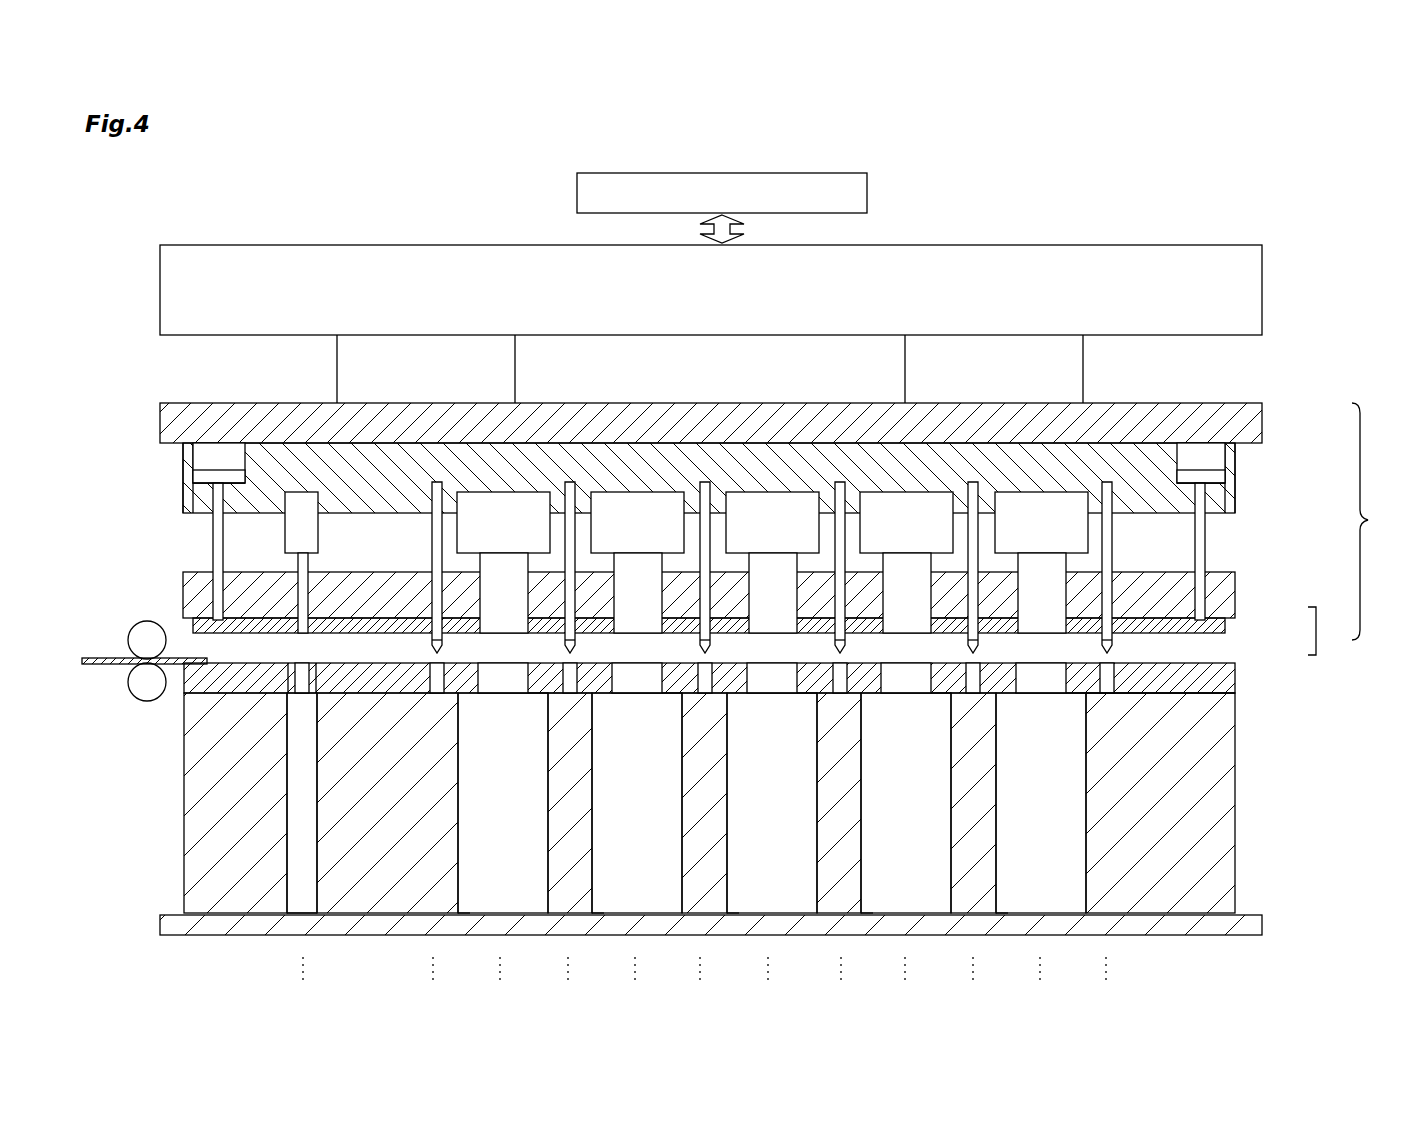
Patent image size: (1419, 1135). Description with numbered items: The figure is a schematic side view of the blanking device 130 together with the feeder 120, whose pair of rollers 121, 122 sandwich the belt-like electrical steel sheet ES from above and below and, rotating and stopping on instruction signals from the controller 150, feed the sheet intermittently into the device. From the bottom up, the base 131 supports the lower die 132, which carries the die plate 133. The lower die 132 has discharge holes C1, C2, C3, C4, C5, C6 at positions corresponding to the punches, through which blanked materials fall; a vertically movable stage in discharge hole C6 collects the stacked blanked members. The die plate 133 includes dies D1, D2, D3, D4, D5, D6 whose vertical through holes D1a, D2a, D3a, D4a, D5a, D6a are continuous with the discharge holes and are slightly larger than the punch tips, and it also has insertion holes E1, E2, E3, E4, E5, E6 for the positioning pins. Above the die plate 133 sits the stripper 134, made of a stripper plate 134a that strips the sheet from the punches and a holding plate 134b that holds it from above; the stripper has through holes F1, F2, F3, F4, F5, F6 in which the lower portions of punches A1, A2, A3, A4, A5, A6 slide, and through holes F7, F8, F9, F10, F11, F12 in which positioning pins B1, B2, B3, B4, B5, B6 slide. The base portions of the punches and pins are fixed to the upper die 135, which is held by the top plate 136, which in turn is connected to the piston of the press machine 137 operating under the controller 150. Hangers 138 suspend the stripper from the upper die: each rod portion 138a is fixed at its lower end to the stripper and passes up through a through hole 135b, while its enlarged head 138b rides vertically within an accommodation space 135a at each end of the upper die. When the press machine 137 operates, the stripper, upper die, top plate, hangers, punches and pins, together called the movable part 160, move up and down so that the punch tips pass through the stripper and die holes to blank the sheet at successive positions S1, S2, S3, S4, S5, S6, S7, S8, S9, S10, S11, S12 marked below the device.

The blanking device 130 is at (126, 264).
The press machine 137 is at (1262, 285).
The controller 150 is at (867, 194).
The top plate 136 is at (1262, 420).
The upper die 135 is at (1235, 503).
The accommodation space 135a is at (200, 466).
The through hole 135b is at (183, 460).
The hanger 138 is at (725, 488).
The rod portion 138a is at (213, 540).
The head 138b is at (200, 470).
The movable part 160 is at (1385, 521).
The stripper 134 is at (1338, 631).
The stripper plate 134a is at (1225, 632).
The holding plate 134b is at (1235, 602).
The die plate 133 is at (1235, 678).
The lower die 132 is at (1235, 828).
The base 131 is at (1262, 922).
The feeder 120 is at (123, 601).
The roller 121 is at (147, 621).
The roller 122 is at (145, 702).
The electrical steel sheet ES is at (78, 645).
The punch A1 is at (300, 492).
The punch A2 is at (457, 543).
The punch A3 is at (640, 492).
The punch A4 is at (774, 492).
The punch A5 is at (910, 492).
The punch A6 is at (1043, 492).
The positioning pin B1 is at (432, 527).
The positioning pin B2 is at (570, 488).
The positioning pin B3 is at (705, 488).
The positioning pin B4 is at (840, 488).
The positioning pin B5 is at (973, 488).
The positioning pin B6 is at (1107, 488).
The through hole F1 is at (320, 597).
The through hole F2 is at (489, 608).
The through hole F3 is at (622, 608).
The through hole F4 is at (757, 608).
The through hole F5 is at (891, 608).
The through hole F6 is at (1027, 608).
The through hole F7 is at (417, 649).
The through hole F8 is at (552, 649).
The through hole F9 is at (687, 649).
The through hole F10 is at (817, 649).
The through hole F11 is at (951, 649).
The through hole F12 is at (1076, 649).
The die D1 is at (318, 667).
The die D2 is at (541, 697).
The die D3 is at (676, 697).
The die D4 is at (811, 697).
The die D5 is at (946, 697).
The die D6 is at (1081, 697).
The through hole D1a is at (299, 665).
The through hole D2a is at (480, 668).
The through hole D3a is at (614, 668).
The through hole D4a is at (749, 668).
The through hole D5a is at (883, 668).
The through hole D6a is at (1018, 668).
The insertion hole E1 is at (456, 695).
The insertion hole E2 is at (590, 695).
The insertion hole E3 is at (725, 695).
The insertion hole E4 is at (859, 695).
The insertion hole E5 is at (994, 695).
The insertion hole E6 is at (1150, 693).
The discharge hole C1 is at (290, 905).
The discharge hole C2 is at (458, 903).
The discharge hole C3 is at (592, 903).
The discharge hole C4 is at (727, 903).
The discharge hole C5 is at (861, 903).
The discharge hole C6 is at (996, 903).
The position S1 is at (304, 985).
The position S2 is at (433, 985).
The position S3 is at (501, 985).
The position S4 is at (568, 985).
The position S5 is at (634, 985).
The position S6 is at (701, 985).
The position S7 is at (768, 985).
The position S8 is at (836, 985).
The position S9 is at (903, 985).
The position S10 is at (975, 985).
The position S11 is at (1042, 985).
The position S12 is at (1110, 985).